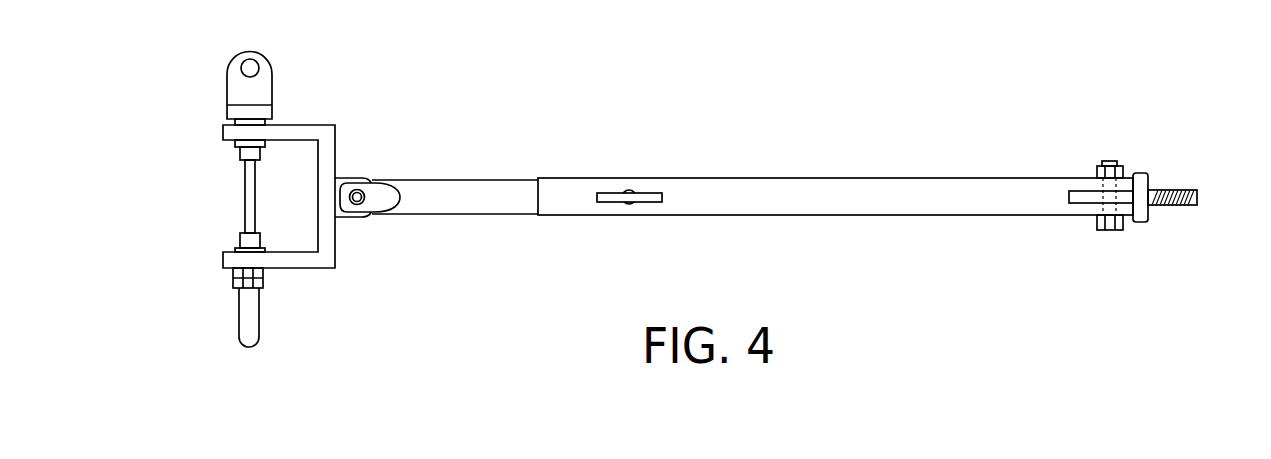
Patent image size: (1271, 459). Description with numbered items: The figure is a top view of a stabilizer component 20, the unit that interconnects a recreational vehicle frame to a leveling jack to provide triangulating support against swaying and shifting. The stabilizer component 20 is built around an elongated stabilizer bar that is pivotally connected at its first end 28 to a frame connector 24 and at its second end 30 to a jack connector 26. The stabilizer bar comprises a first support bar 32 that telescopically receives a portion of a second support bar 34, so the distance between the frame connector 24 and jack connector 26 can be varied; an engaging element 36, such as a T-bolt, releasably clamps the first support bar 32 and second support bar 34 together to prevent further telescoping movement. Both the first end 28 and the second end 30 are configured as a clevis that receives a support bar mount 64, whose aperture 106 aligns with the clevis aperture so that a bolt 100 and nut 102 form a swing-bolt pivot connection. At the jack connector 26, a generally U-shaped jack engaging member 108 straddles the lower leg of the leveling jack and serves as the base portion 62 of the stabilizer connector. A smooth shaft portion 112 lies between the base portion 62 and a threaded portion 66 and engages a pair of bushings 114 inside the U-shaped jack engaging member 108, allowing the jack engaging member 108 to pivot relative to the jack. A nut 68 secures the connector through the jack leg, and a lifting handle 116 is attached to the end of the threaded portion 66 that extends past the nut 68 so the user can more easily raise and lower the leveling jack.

The stabilizer component 20 is at (794, 129).
The frame connector 24 is at (1143, 240).
The jack connector 26 is at (343, 293).
The first end 28 is at (1067, 155).
The second end 30 is at (391, 159).
The first support bar 32 is at (801, 216).
The second support bar 34 is at (455, 215).
The engaging element 36 is at (643, 178).
The base portion 62 is at (233, 105).
The support bar mount 64 is at (270, 80).
The threaded portion 66 is at (1197, 197).
The nut 68 is at (235, 270).
The bolt 100 is at (1097, 231).
The nut 102 is at (1123, 170).
The aperture 106 is at (249, 72).
The jack engaging member 108 is at (334, 128).
The shaft portion 112 is at (245, 203).
The bushings 114 is at (240, 153).
The lifting handle 116 is at (259, 335).